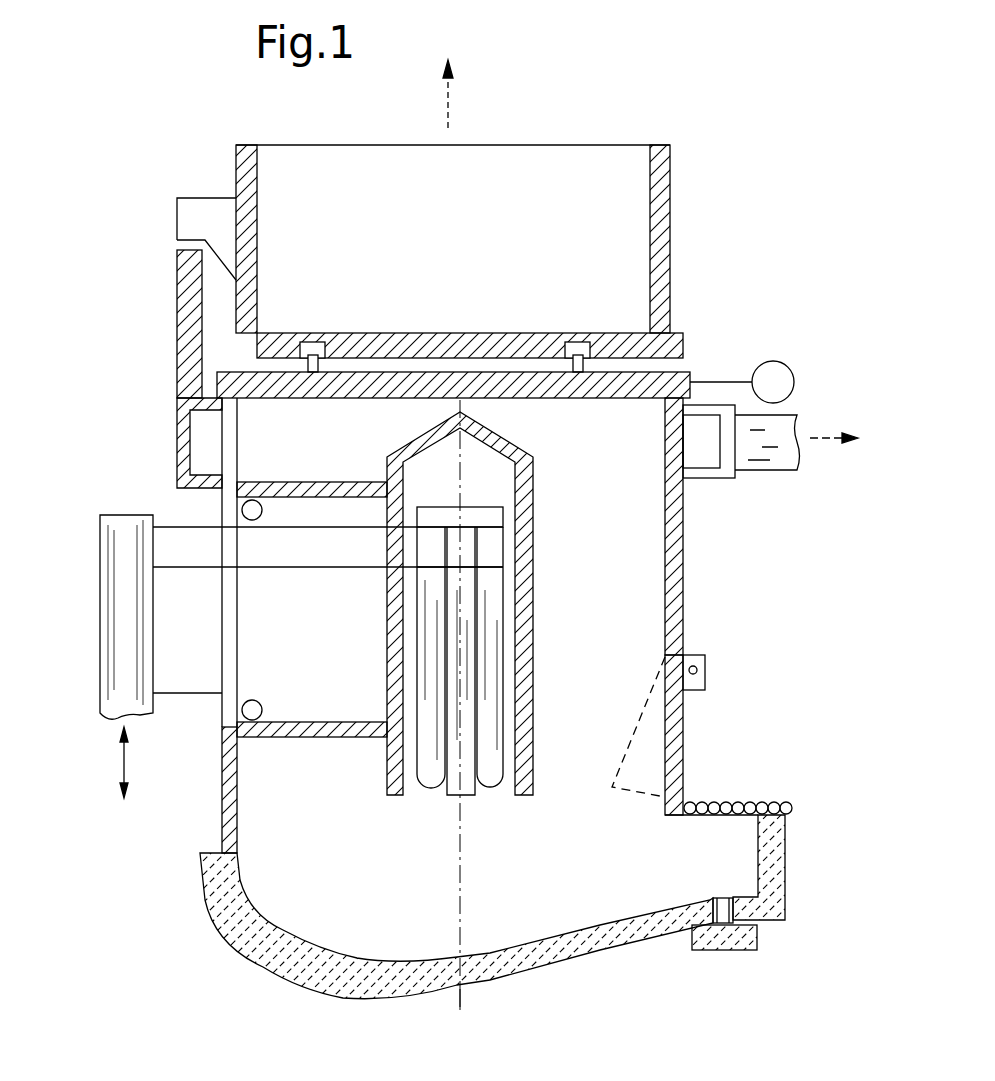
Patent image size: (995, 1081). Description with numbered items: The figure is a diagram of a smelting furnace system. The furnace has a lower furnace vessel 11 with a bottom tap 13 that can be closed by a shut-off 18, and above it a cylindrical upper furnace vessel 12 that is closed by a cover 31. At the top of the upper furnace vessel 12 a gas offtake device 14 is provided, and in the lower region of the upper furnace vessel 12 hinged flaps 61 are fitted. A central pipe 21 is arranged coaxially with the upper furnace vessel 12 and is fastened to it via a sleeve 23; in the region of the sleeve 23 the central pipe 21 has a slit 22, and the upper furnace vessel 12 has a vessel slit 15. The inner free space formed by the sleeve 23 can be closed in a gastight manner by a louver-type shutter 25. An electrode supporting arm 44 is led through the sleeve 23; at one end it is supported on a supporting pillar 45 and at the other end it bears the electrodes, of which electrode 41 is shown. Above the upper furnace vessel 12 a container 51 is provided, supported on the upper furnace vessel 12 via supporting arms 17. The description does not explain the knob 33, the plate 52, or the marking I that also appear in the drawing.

The lower furnace vessel 11 is at (268, 940).
The upper furnace vessel 12 is at (683, 635).
The bottom tap 13 is at (722, 933).
The gas offtake device 14 is at (795, 460).
The vessel slit 15 is at (153, 693).
The supporting arms 17 is at (188, 312).
The shut-off 18 is at (747, 938).
The central pipe 21 is at (527, 640).
The slit 22 is at (387, 680).
The sleeve 23 is at (317, 740).
The louver-type shutter 25 is at (252, 620).
The cover 31 is at (683, 375).
The handle knob 33 is at (775, 375).
The electrode 41 is at (453, 855).
The electrode supporting arm 44 is at (177, 545).
The supporting pillar 45 is at (122, 628).
The container 51 is at (668, 232).
The container bottom plate 52 is at (600, 343).
The hinged flaps 61 is at (683, 748).
The axis I is at (463, 990).